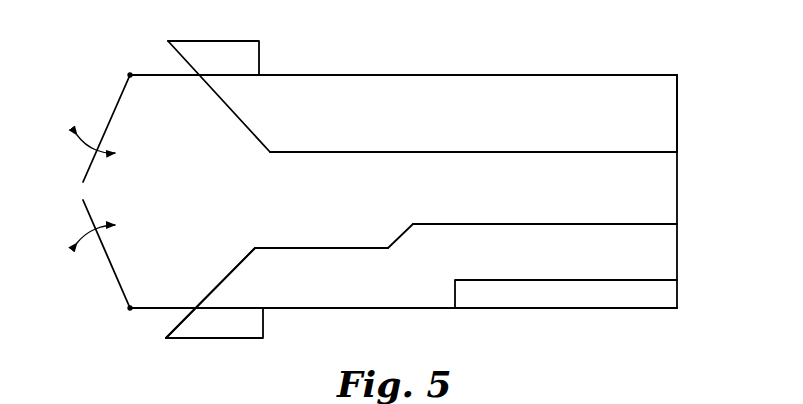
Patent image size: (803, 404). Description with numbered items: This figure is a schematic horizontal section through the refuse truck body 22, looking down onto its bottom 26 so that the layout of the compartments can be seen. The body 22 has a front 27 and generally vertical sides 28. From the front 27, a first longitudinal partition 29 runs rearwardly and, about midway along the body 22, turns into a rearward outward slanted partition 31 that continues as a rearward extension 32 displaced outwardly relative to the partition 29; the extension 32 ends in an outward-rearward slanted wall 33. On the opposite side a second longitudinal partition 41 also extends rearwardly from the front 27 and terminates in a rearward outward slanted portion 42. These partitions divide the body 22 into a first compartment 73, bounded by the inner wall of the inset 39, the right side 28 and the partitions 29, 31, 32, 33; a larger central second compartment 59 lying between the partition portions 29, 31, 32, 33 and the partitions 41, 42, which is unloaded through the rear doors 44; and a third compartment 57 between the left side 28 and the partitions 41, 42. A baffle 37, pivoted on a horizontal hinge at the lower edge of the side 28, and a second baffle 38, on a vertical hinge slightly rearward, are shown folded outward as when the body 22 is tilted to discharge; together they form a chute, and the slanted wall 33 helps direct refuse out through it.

The body 22 is at (708, 214).
The bottom 26 is at (344, 209).
The front 27 is at (679, 113).
The sides 28 is at (345, 75).
The first longitudinal partition 29 is at (550, 224).
The rearward outward slanted partition 31 is at (400, 240).
The rearward extension 32 is at (272, 248).
The outward-rearward slanted wall 33 is at (218, 283).
The baffle 37 is at (205, 47).
The second baffle 38 is at (172, 50).
The inset 39 is at (500, 282).
The second longitudinal partition 41 is at (405, 152).
The rearward outward slanted portion 42 is at (240, 114).
The doors 44 is at (108, 118).
The third compartment 57 is at (514, 122).
The second compartment 59 is at (474, 209).
The first compartment 73 is at (499, 255).